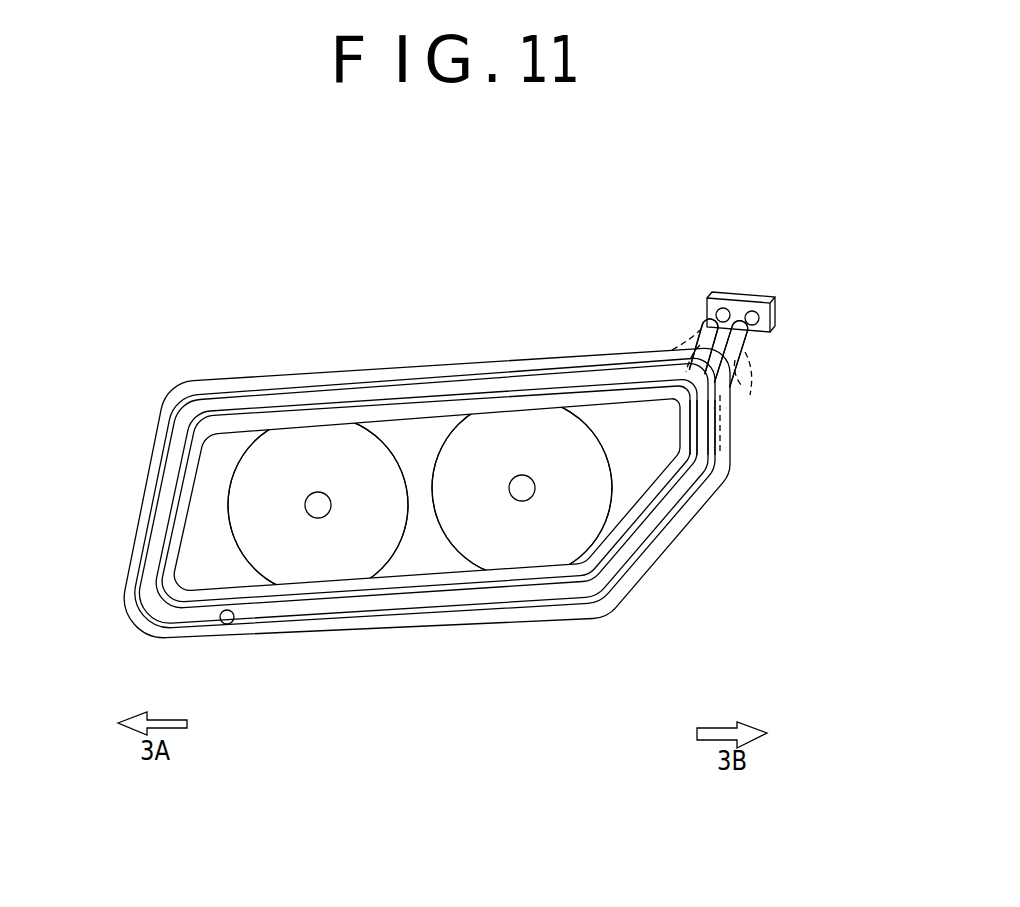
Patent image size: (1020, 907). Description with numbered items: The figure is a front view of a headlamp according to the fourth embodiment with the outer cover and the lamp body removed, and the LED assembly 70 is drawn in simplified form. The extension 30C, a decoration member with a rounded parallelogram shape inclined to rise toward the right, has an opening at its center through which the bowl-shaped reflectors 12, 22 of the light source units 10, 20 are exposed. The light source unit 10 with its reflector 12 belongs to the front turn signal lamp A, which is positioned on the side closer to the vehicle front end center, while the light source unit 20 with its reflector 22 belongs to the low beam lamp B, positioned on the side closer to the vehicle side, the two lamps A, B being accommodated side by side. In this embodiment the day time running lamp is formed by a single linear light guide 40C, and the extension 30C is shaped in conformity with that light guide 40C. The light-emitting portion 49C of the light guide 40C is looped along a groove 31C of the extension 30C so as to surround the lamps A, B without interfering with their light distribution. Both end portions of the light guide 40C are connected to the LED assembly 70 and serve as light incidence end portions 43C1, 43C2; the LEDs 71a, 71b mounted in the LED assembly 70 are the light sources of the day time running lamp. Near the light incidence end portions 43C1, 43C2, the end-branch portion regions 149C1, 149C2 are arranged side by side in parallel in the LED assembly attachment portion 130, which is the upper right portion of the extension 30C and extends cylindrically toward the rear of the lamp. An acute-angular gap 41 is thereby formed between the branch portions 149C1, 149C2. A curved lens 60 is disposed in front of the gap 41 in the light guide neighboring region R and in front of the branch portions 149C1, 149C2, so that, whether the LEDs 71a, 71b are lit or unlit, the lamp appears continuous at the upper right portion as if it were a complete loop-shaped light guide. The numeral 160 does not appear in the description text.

The extension 30C is at (152, 458).
The light-emitting portion 49C is at (295, 400).
The light guide 40C is at (405, 372).
The groove 31C is at (228, 624).
The reflector 12 is at (310, 558).
The light source unit 10 is at (318, 505).
The reflector 22 is at (534, 545).
The light source unit 20 is at (522, 488).
The front turn signal lamp A is at (402, 556).
The low beam lamp B is at (454, 554).
The curved lens 60 is at (692, 470).
The LED assembly attachment portion 130 is at (738, 388).
The light incidence end portion 43C1 is at (708, 330).
The light incidence end portion 43C2 is at (773, 337).
The branch portion 149C1 is at (698, 327).
The branch portion 149C2 is at (752, 348).
The bent portion 160 is at (690, 360).
The light guide neighboring region R is at (743, 384).
The acute-angular gap 41 is at (730, 430).
The LED assembly 70 is at (788, 312).
The LED 71a is at (727, 295).
The LED 71b is at (758, 308).